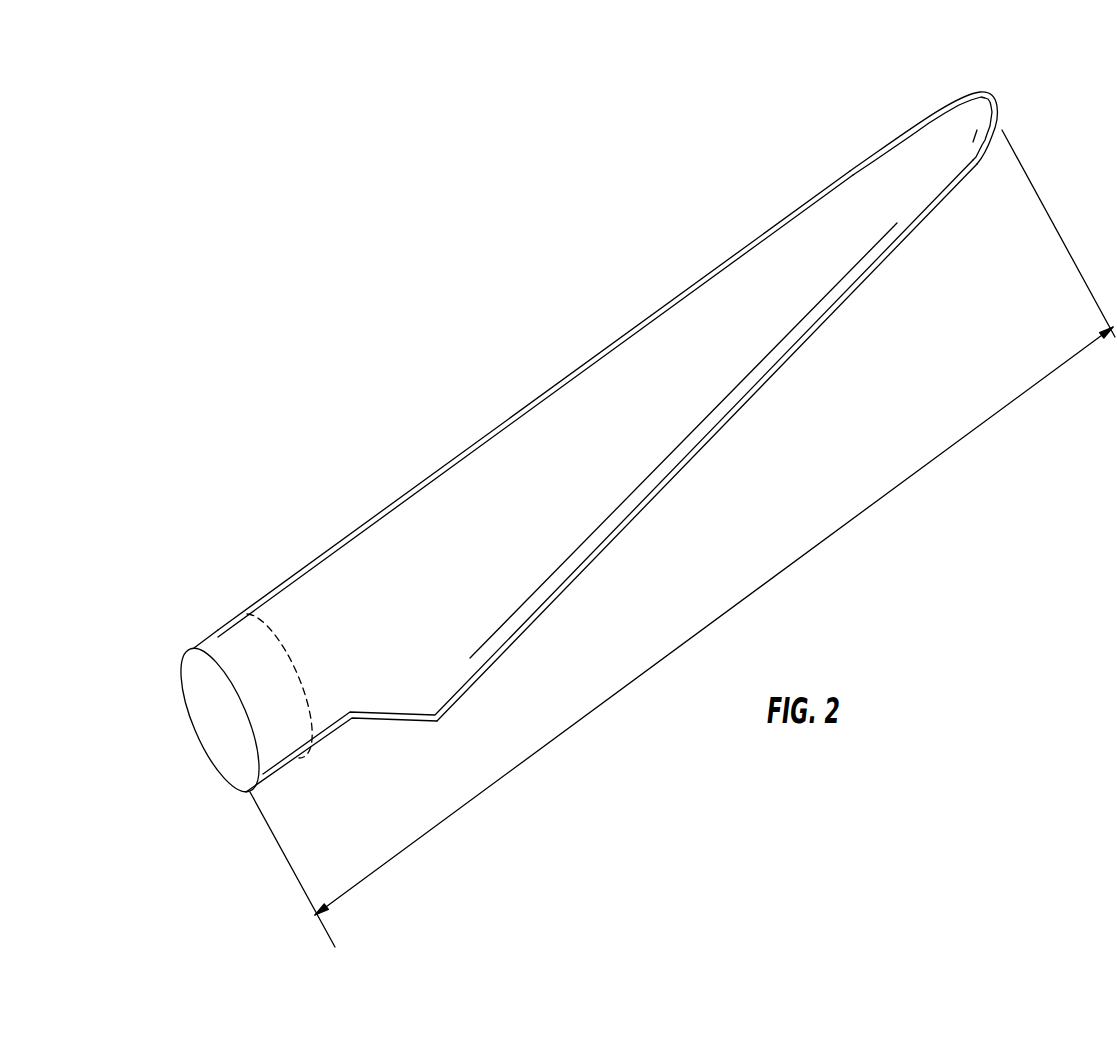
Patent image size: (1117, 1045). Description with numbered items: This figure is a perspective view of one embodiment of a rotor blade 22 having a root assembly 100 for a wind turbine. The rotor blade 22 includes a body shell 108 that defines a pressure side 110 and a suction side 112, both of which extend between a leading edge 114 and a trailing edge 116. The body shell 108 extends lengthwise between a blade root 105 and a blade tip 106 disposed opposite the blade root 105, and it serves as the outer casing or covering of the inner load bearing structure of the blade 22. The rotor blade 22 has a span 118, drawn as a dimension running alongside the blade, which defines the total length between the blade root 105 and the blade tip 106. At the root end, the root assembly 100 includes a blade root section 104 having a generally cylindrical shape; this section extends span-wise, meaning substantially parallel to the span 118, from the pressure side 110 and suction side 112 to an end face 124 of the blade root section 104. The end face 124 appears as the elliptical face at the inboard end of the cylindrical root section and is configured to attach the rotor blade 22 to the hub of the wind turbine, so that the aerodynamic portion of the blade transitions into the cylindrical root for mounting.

The rotor blade 22 is at (537, 428).
The root assembly 100 is at (118, 686).
The blade root section 104 is at (195, 632).
The blade root 105 is at (233, 618).
The blade tip 106 is at (998, 92).
The body shell 108 is at (493, 643).
The pressure side 110 is at (543, 560).
The suction side 112 is at (445, 510).
The leading edge 114 is at (530, 402).
The trailing edge 116 is at (643, 513).
The span 118 is at (743, 599).
The end face 124 is at (198, 725).